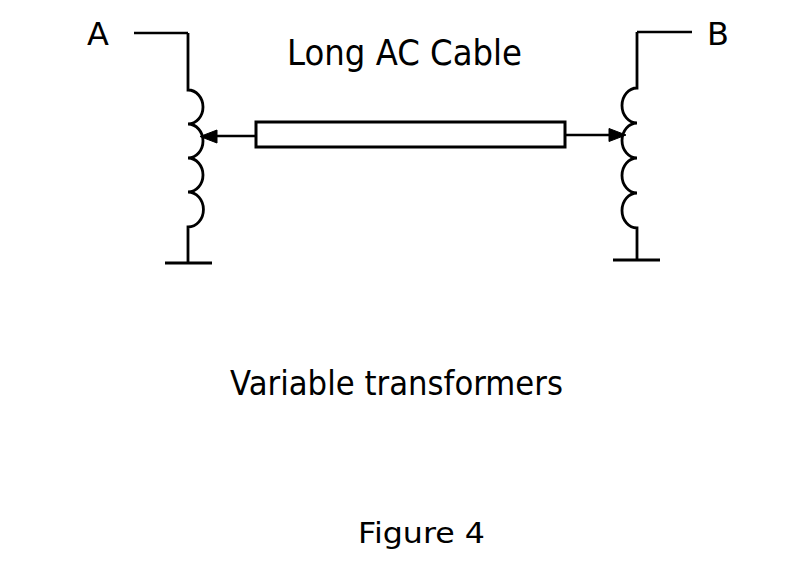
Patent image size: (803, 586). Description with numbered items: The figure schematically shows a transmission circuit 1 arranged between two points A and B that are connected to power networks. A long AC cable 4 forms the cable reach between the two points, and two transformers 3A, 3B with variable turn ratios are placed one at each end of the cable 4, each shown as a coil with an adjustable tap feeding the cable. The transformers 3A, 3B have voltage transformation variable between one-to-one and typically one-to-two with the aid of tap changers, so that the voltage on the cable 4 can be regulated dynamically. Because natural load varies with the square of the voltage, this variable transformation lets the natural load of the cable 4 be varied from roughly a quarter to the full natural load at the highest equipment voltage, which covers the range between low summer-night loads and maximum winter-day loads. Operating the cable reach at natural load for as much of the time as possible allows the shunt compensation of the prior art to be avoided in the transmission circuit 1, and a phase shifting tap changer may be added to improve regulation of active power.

The transmission circuit 1 is at (376, 96).
The variable transformer 3A is at (208, 157).
The variable transformer 3B is at (610, 152).
The cable 4 is at (427, 160).